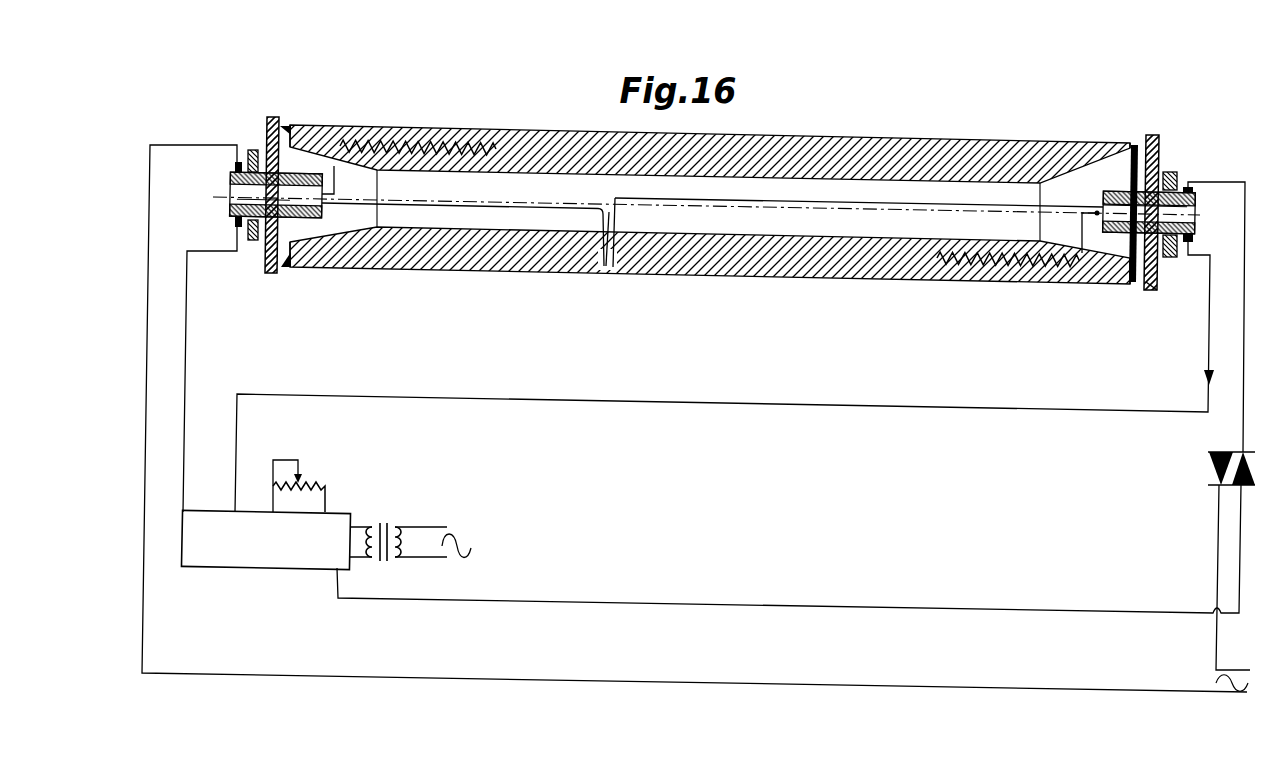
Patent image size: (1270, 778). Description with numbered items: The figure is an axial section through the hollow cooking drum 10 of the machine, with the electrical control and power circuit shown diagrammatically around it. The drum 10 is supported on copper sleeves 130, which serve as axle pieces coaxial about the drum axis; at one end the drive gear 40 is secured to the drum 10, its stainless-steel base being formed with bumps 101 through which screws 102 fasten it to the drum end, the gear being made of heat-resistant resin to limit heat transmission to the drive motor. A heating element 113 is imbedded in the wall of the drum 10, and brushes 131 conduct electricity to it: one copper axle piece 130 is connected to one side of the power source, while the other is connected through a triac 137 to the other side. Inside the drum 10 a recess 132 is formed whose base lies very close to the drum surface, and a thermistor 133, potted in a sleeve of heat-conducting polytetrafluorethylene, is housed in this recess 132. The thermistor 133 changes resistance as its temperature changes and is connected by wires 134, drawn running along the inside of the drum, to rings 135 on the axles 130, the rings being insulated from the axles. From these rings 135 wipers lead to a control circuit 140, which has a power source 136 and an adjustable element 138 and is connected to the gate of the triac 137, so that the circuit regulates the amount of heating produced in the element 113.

The drum 10 is at (827, 148).
The drive gear 40 is at (1157, 270).
The bumps 101 is at (1130, 147).
The screws 102 is at (1140, 138).
The heating element 113 is at (424, 146).
The copper sleeves 130 is at (295, 226).
The brushes 131 is at (244, 148).
The recess 132 is at (615, 265).
The thermistor 133 is at (590, 268).
The inner tube 134 is at (492, 208).
The rings 135 is at (237, 226).
The power source 136 is at (383, 515).
The triac 137 is at (1215, 472).
The adjustable element 138 is at (310, 474).
The control circuit 140 is at (283, 566).